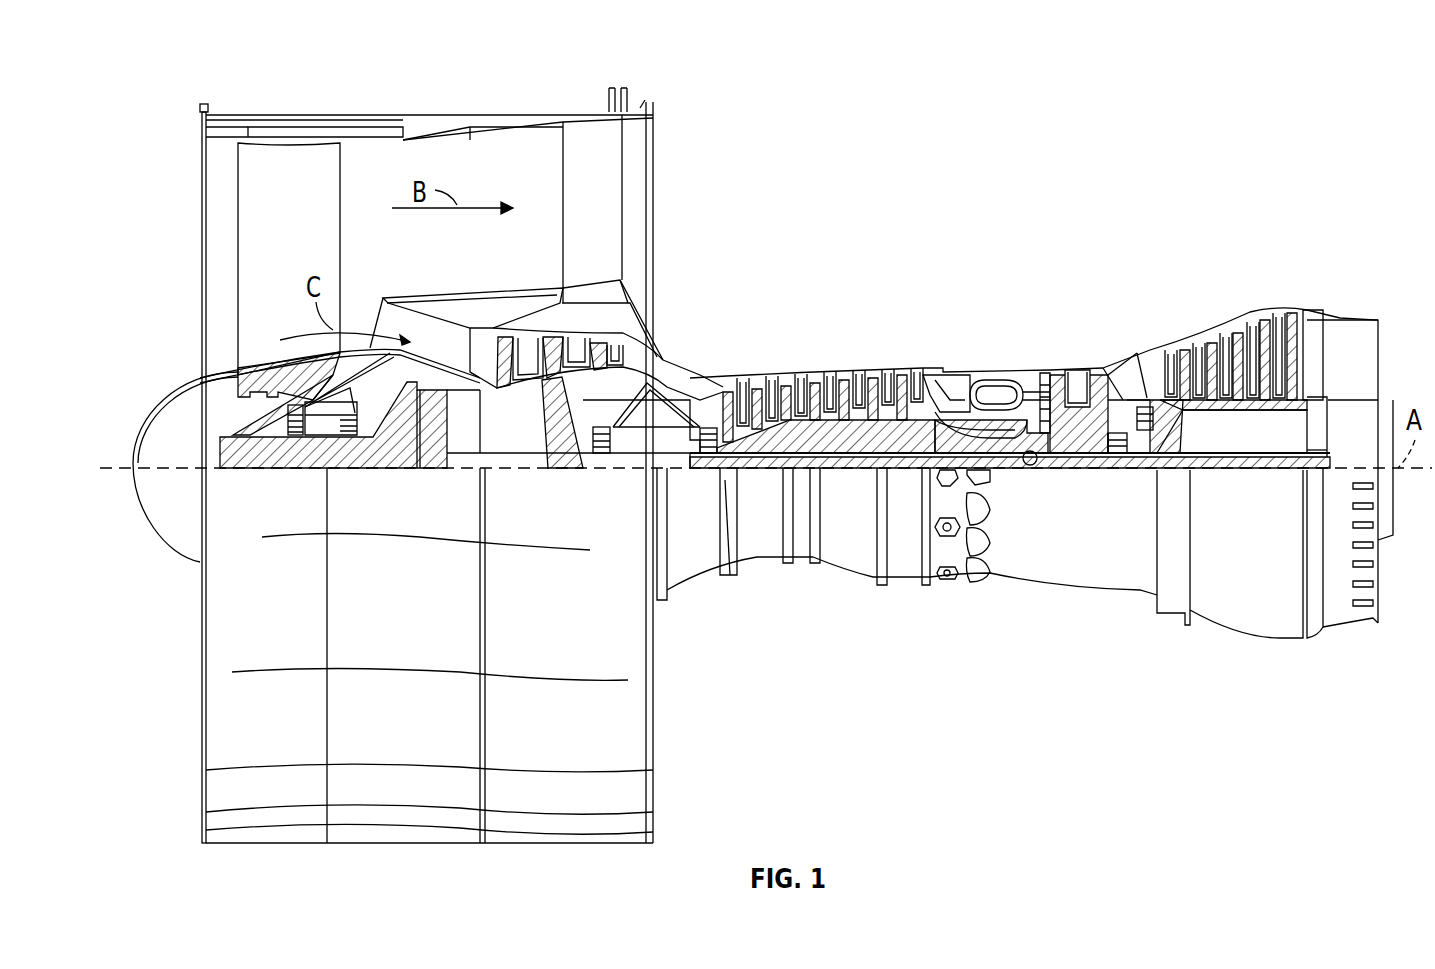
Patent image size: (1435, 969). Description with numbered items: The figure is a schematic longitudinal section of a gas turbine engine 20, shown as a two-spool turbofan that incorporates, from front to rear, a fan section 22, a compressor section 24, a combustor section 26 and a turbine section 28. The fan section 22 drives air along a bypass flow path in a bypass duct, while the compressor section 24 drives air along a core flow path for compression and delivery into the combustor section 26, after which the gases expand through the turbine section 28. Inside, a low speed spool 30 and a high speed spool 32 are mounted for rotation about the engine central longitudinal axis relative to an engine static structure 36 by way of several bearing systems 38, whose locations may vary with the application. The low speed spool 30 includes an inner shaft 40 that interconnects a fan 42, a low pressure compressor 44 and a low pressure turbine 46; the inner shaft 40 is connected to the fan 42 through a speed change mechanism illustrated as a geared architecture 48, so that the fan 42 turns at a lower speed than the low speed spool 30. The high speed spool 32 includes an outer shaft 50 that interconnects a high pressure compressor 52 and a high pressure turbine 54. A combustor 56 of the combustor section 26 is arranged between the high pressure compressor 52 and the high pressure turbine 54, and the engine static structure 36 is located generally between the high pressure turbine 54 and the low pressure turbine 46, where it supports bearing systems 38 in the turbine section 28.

The gas turbine engine 20 is at (1147, 157).
The fan section 22 is at (470, 90).
The compressor section 24 is at (990, 233).
The combustor section 26 is at (1117, 233).
The turbine section 28 is at (1322, 233).
The low speed spool 30 is at (868, 475).
The high speed spool 32 is at (920, 400).
The engine static structure 36 is at (915, 582).
The bearing systems 38 is at (302, 440).
The inner shaft 40 is at (724, 470).
The fan 42 is at (312, 243).
The low pressure compressor 44 is at (572, 345).
The low pressure turbine 46 is at (1240, 335).
The geared architecture 48 is at (430, 437).
The outer shaft 50 is at (1040, 460).
The high pressure compressor 52 is at (825, 425).
The high pressure turbine 54 is at (1082, 372).
The combustor 56 is at (1020, 388).